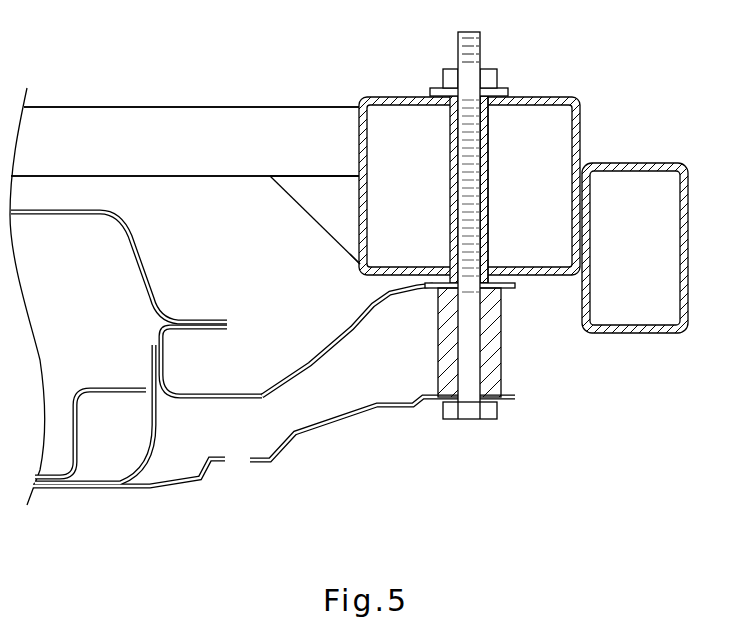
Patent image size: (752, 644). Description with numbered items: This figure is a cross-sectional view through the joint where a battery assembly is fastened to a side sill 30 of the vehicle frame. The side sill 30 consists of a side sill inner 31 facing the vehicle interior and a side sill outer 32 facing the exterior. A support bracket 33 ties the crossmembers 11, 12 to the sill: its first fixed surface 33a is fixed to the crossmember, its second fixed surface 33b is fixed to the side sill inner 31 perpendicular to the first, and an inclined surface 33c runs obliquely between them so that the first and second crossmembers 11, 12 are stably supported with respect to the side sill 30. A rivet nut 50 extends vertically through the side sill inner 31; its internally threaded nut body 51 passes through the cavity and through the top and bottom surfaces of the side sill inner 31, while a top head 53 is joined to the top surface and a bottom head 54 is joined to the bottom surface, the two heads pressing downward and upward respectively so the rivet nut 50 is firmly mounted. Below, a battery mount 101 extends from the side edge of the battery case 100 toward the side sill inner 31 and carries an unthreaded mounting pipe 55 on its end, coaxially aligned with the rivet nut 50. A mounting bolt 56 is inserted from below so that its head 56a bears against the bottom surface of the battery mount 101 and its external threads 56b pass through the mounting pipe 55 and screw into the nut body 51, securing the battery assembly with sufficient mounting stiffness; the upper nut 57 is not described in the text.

The first crossmember 11 is at (190, 107).
The second crossmember 12 is at (190, 107).
The side sill 30 is at (523, 173).
The side sill inner 31 is at (550, 97).
The side sill outer 32 is at (655, 163).
The support bracket 33 is at (287, 194).
The first fixed surface 33a is at (308, 176).
The second fixed surface 33b is at (359, 264).
The inclined surface 33c is at (325, 233).
The rivet nut 50 is at (498, 197).
The nut body 51 is at (488, 252).
The top head 53 is at (433, 88).
The bottom head 54 is at (508, 280).
The mounting pipe 55 is at (496, 366).
The mounting bolt 56 is at (537, 268).
The head 56a is at (494, 408).
The external threads 56b is at (476, 139).
The upper nut 57 is at (490, 69).
The battery case 100 is at (124, 267).
The battery mount 101 is at (318, 408).